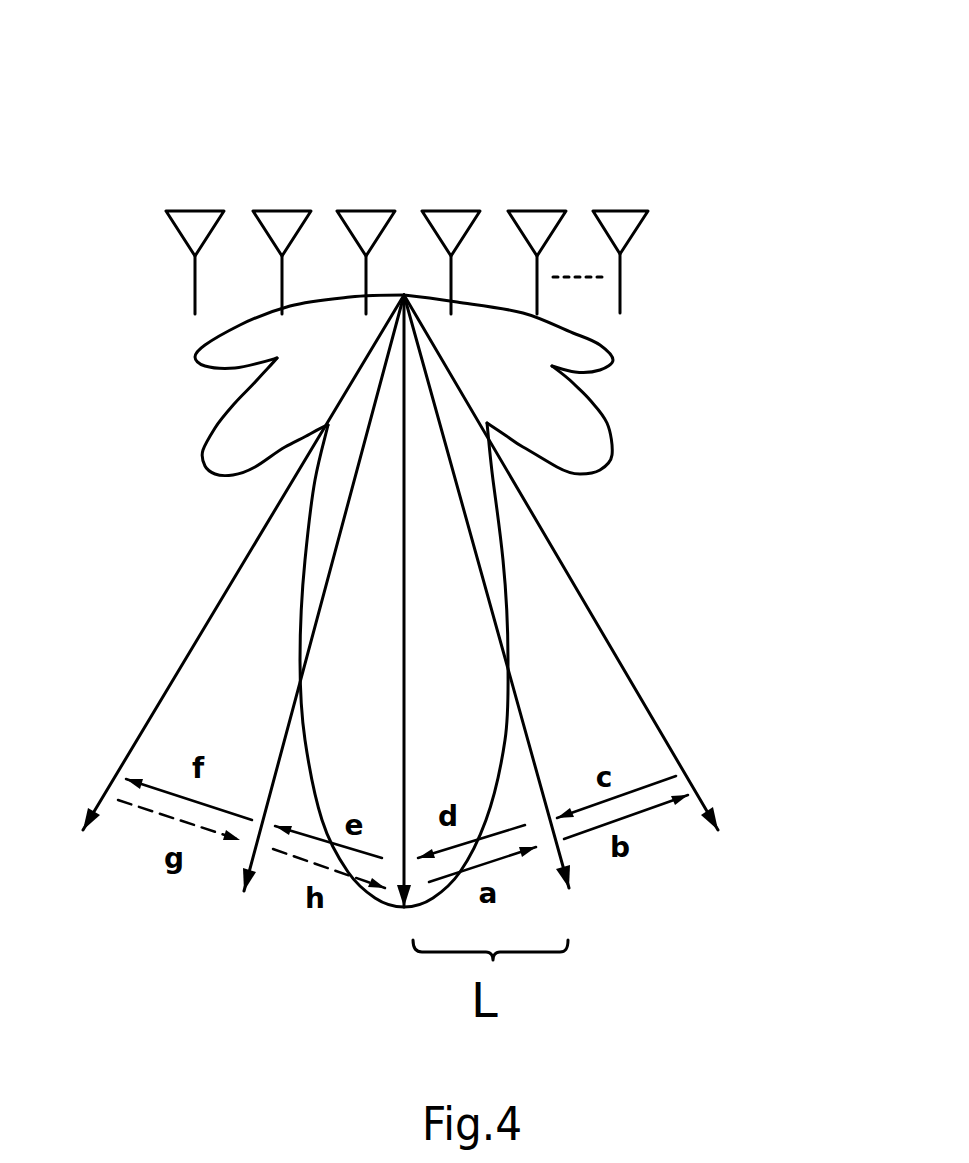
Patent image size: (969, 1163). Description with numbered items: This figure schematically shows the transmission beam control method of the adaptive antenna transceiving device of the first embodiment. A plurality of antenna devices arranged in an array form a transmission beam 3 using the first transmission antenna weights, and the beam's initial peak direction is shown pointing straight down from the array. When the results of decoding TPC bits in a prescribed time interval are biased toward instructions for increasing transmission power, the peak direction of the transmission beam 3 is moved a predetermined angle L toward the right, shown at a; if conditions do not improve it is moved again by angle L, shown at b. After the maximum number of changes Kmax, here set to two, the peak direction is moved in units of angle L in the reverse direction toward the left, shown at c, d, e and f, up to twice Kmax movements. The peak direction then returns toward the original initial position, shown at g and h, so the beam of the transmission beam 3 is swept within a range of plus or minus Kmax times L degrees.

The transmission beam 3 is at (505, 555).